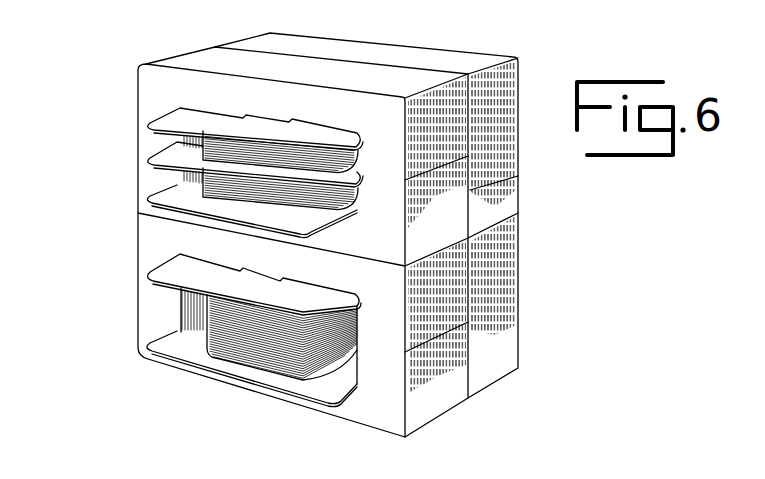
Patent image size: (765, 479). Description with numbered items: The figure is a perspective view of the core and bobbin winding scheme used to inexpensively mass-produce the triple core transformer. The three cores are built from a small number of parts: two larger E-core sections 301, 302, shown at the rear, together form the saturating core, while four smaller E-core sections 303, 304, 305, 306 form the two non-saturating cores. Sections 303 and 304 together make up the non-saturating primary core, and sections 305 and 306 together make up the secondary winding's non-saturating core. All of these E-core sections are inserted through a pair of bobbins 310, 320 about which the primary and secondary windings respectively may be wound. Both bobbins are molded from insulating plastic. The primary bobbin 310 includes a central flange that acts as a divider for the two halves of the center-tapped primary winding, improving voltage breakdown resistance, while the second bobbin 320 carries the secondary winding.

The larger E-core section 301 is at (503, 179).
The larger E-core section 302 is at (503, 333).
The smaller E-core section 303 is at (148, 90).
The smaller E-core section 304 is at (148, 170).
The smaller E-core section 305 is at (153, 233).
The smaller E-core section 306 is at (148, 320).
The primary bobbin 310 is at (310, 140).
The bobbin 320 is at (300, 294).